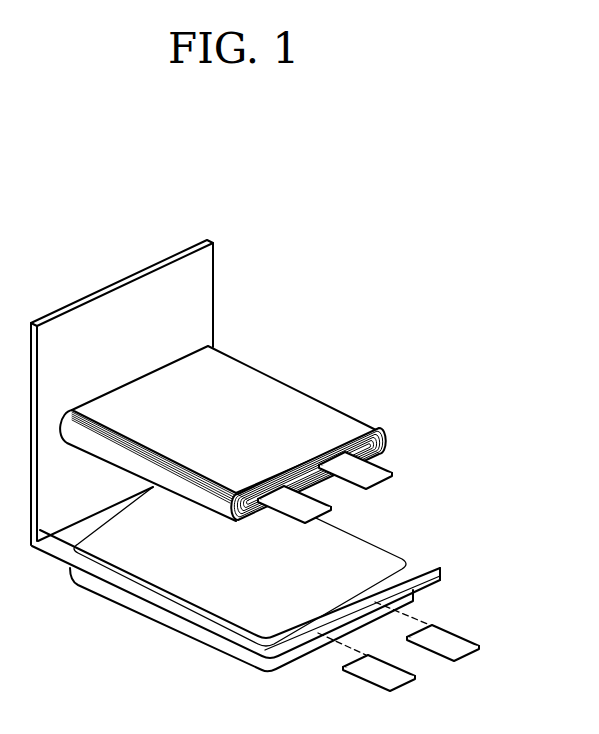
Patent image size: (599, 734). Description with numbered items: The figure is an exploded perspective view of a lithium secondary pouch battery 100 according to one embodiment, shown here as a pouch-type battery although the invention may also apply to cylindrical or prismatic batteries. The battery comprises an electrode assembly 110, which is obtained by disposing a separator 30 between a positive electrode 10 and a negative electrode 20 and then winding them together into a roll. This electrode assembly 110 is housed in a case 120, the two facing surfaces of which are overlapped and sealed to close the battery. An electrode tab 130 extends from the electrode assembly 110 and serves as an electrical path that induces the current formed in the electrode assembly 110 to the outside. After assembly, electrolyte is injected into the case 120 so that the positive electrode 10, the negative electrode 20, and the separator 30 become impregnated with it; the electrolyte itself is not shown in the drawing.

The lithium secondary pouch battery 100 is at (87, 168).
The electrode assembly 110 is at (319, 384).
The positive electrode 10 is at (385, 447).
The negative electrode 20 is at (378, 431).
The separator 30 is at (385, 438).
The case 120 is at (203, 292).
The electrode tab 130 is at (410, 686).